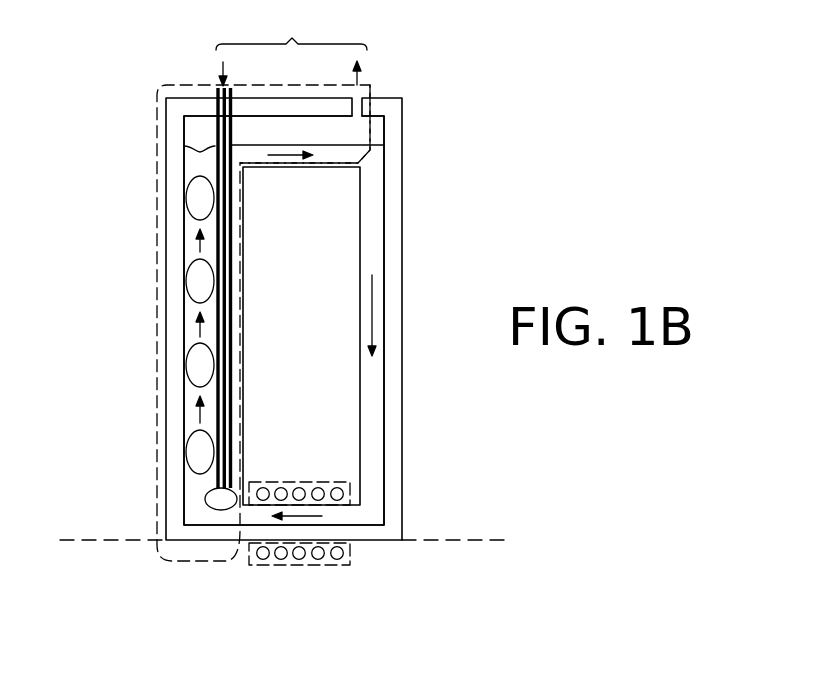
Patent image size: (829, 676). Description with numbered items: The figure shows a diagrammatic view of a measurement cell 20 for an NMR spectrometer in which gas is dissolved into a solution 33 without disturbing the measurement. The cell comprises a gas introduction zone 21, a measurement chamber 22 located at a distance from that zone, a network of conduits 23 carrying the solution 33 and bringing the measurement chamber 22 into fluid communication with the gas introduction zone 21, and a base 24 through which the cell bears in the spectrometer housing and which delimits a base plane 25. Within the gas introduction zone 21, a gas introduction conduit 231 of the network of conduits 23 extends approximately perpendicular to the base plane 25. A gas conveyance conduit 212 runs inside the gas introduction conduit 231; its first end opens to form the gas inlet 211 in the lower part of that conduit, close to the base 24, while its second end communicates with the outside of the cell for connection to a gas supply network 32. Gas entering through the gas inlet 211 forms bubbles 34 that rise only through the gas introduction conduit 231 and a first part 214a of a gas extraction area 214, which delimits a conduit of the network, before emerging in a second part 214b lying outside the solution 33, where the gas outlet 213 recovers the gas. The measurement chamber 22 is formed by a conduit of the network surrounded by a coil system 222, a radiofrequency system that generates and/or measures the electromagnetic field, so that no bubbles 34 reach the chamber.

The measurement cell 20 is at (148, 85).
The gas introduction zone 21 is at (153, 446).
The measurement chamber 22 is at (337, 565).
The coil system 222 is at (318, 553).
The network of conduits 23 is at (370, 382).
The base 24 is at (393, 522).
The base plane 25 is at (503, 540).
The gas supply network 32 is at (291, 50).
The solution 33 is at (373, 158).
The gas bubbles 34 is at (193, 278).
The gas inlet 211 is at (213, 484).
The gas conveyance conduit 212 is at (215, 223).
The gas outlet 213 is at (358, 102).
The gas extraction area 214 is at (197, 135).
The first part of the extraction area 214a is at (340, 156).
The second part of the extraction area 214b is at (302, 125).
The gas introduction conduit 231 is at (190, 337).